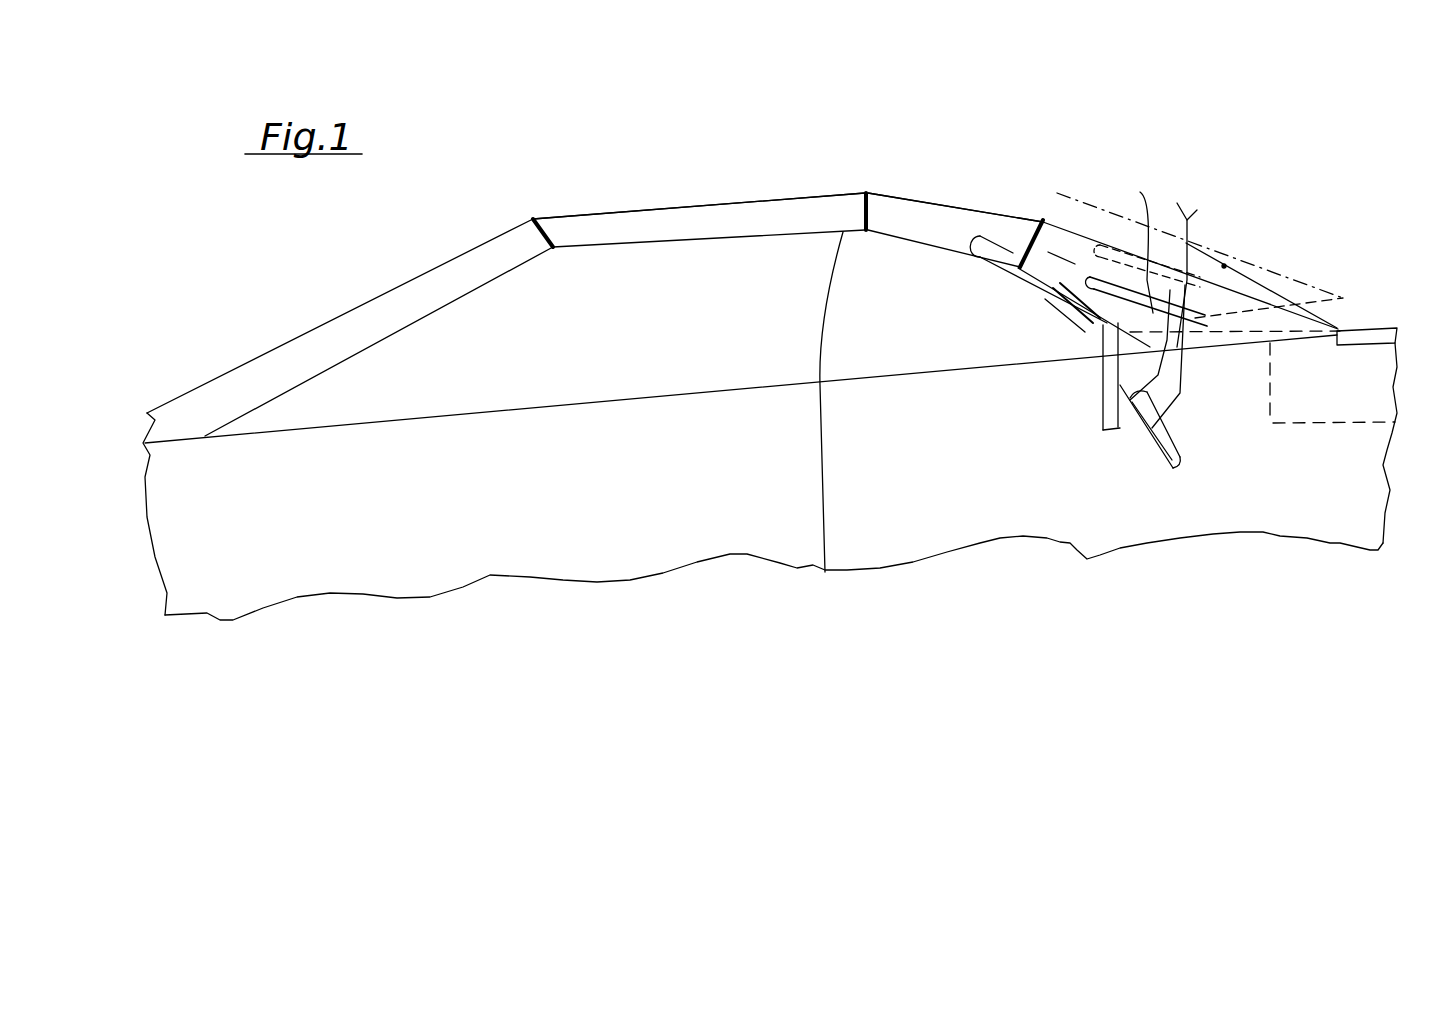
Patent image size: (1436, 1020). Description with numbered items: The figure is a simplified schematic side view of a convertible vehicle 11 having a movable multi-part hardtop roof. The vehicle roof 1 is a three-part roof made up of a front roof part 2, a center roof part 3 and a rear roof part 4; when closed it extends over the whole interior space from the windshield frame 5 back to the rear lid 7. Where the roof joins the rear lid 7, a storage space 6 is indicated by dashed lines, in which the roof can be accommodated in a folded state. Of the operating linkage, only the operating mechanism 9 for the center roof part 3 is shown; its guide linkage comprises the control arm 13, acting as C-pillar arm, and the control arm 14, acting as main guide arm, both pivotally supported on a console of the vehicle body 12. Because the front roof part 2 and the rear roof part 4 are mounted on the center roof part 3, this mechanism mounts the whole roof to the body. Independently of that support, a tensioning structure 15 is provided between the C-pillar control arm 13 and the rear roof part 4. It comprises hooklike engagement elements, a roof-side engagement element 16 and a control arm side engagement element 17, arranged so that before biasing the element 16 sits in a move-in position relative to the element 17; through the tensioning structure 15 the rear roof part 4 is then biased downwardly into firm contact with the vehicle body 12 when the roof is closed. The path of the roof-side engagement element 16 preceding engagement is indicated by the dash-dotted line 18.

The vehicle roof 1 is at (937, 194).
The front roof part 2 is at (600, 220).
The center roof part 3 is at (955, 215).
The rear roof part 4 is at (1227, 298).
The windshield frame 5 is at (518, 254).
The storage space 6 is at (1385, 404).
The rear lid 7 is at (1370, 340).
The operating mechanism 9 is at (1072, 379).
The convertible vehicle 11 is at (528, 160).
The vehicle body 12 is at (877, 546).
The control arm 13 is at (1170, 452).
The control arm 14 is at (1103, 432).
The tensioning structure 15 is at (1214, 354).
The roof-side engagement element 16 is at (1133, 240).
The control arm side engagement element 17 is at (1180, 283).
The dash-dotted line 18 is at (1199, 211).